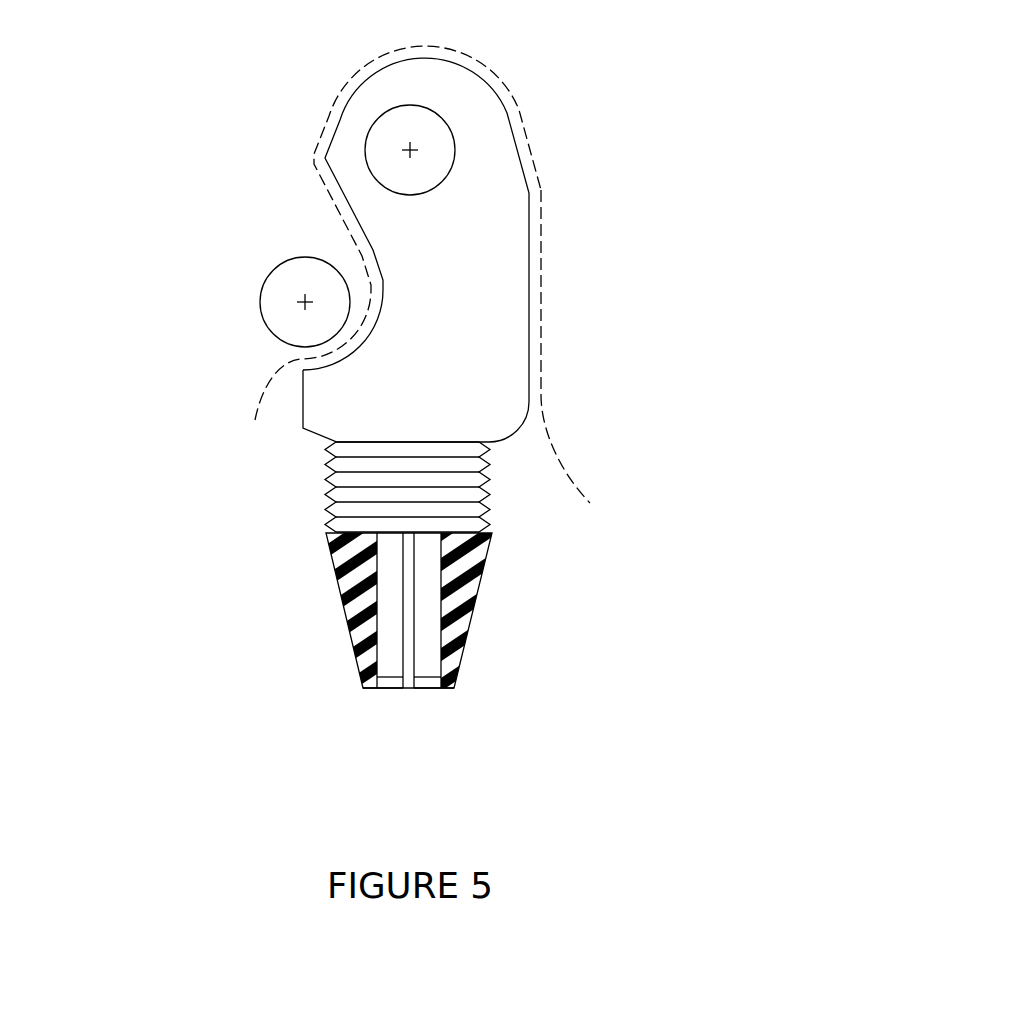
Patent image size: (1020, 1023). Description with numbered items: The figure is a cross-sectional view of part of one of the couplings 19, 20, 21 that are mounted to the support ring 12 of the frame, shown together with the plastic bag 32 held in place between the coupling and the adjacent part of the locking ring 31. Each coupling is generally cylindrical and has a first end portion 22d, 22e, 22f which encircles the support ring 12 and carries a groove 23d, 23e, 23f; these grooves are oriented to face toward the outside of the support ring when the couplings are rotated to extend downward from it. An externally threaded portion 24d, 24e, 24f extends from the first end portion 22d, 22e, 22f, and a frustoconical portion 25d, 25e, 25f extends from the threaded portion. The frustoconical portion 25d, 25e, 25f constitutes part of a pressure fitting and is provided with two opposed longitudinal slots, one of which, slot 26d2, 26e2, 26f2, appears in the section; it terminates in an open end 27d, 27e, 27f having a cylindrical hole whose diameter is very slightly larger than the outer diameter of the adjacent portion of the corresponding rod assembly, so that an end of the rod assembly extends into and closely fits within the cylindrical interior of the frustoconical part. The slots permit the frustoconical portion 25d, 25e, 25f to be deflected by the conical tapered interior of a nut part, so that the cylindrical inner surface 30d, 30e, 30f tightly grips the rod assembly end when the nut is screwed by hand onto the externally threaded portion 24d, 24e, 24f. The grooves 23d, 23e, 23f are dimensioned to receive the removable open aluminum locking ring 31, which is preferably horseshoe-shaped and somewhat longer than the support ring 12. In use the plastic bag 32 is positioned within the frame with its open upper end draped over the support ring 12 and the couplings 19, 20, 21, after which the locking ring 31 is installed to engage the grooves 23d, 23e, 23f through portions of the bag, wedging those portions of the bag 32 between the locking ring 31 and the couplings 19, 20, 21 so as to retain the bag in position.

The support ring 12 is at (427, 128).
The coupling 19 is at (585, 250).
The coupling 20 is at (585, 250).
The coupling 21 is at (487, 147).
The locking ring 31 is at (290, 288).
The plastic bag 32 is at (547, 194).
The groove 23d is at (586, 288).
The groove 23e is at (586, 288).
The groove 23f is at (385, 273).
The first end portion 22d is at (710, 346).
The first end portion 22e is at (710, 346).
The first end portion 22f is at (537, 372).
The externally threaded portion 24d is at (614, 478).
The externally threaded portion 24e is at (614, 478).
The externally threaded portion 24f is at (462, 482).
The frustoconical portion 25d is at (598, 615).
The frustoconical portion 25e is at (598, 615).
The frustoconical portion 25f is at (491, 577).
The longitudinal slot 26d2 is at (643, 610).
The longitudinal slot 26e2 is at (643, 610).
The longitudinal slot 26f2 is at (421, 628).
The open end 27d is at (617, 727).
The open end 27e is at (617, 727).
The open end 27f is at (441, 694).
The cylindrical inner surface 30d is at (237, 610).
The cylindrical inner surface 30e is at (237, 610).
The cylindrical inner surface 30f is at (378, 626).